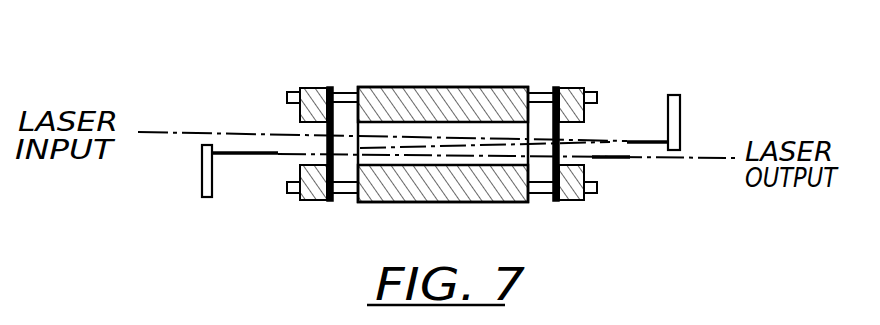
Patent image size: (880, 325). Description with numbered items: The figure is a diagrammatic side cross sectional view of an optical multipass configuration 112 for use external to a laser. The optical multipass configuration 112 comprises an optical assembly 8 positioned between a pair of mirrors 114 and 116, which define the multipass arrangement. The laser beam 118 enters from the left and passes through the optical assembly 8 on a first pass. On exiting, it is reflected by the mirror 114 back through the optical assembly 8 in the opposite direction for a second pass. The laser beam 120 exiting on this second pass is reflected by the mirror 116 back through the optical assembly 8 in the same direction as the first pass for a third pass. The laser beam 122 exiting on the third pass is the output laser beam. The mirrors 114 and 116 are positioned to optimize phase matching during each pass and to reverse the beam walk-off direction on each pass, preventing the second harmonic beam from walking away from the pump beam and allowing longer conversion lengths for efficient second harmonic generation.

The optical assembly 8 is at (499, 86).
The optical multipass configuration 112 is at (606, 55).
The mirror 114 is at (680, 100).
The mirror 116 is at (201, 184).
The laser beam 118 is at (160, 132).
The laser beam 120 is at (408, 148).
The laser beam 122 is at (640, 158).